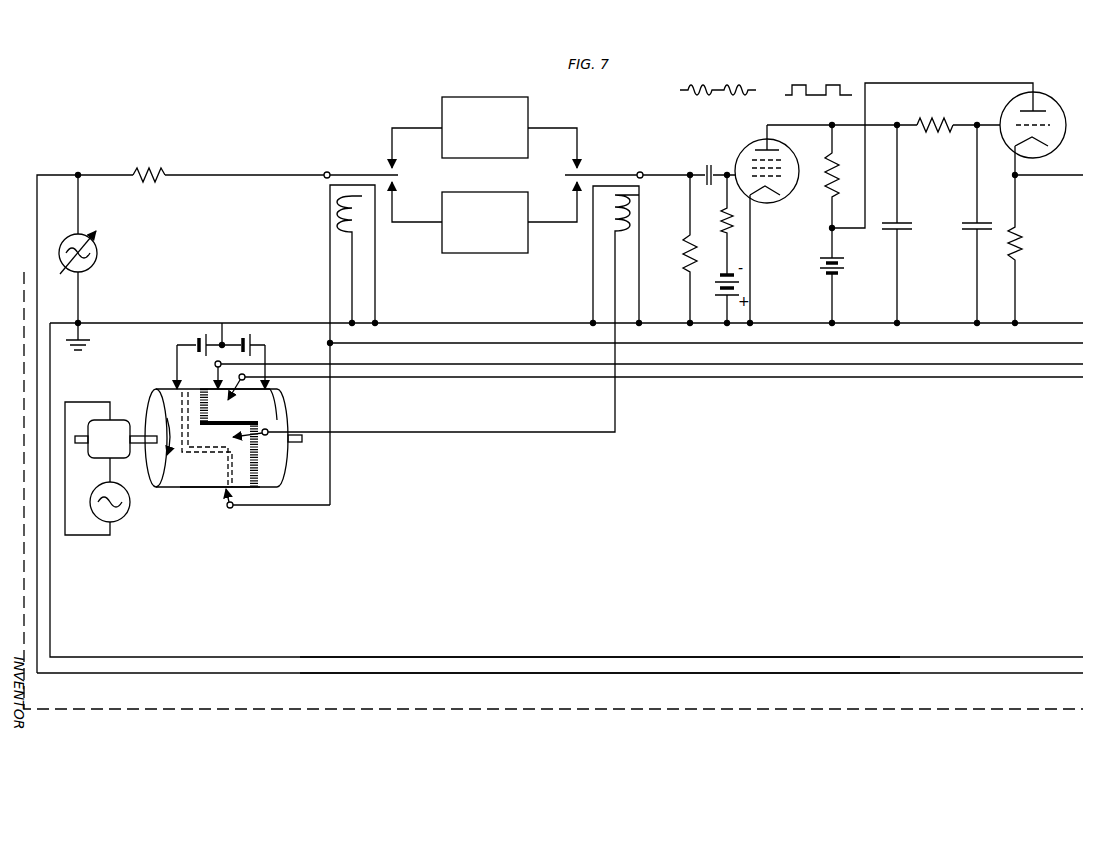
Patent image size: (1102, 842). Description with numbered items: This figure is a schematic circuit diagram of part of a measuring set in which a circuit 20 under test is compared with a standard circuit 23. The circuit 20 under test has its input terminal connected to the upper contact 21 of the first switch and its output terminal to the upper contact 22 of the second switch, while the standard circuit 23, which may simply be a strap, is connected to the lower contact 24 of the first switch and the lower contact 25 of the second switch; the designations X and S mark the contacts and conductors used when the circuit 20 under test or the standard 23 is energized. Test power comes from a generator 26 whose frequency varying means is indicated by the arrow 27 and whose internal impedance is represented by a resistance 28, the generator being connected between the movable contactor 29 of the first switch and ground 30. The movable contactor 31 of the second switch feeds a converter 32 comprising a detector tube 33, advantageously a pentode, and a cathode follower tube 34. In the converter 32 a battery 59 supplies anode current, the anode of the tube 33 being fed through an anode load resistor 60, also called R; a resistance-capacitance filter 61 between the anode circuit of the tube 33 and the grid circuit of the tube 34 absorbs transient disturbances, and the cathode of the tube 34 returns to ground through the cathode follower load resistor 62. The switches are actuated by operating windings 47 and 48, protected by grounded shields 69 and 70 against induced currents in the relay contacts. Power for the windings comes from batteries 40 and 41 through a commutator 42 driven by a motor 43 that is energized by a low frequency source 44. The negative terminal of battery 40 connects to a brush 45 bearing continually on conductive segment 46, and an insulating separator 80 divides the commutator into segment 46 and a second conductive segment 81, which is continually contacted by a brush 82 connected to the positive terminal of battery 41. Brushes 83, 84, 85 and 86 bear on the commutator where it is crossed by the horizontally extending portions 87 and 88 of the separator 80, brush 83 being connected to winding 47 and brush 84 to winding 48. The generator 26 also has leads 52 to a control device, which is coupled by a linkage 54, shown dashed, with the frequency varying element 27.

The circuit under test 20 is at (484, 96).
The upper contact of switch S1 21 is at (390, 139).
The upper contact of switch S2 22 is at (582, 139).
The standard circuit 23 is at (487, 253).
The lower contact of switch S1 24 is at (386, 206).
The lower contact of switch S2 25 is at (585, 206).
The generator 26 is at (93, 267).
The arrow indicating frequency variation means 27 is at (98, 236).
The resistance 28 is at (147, 164).
The movable contactor of switch S1 29 is at (327, 171).
The ground 30 is at (84, 333).
The movable contactor of switch S2 31 is at (642, 171).
The converter 32 is at (906, 67).
The detector tube 33 is at (750, 145).
The cathode follower tube 34 is at (1007, 110).
The battery 40 is at (198, 335).
The battery 41 is at (248, 335).
The commutator 42 is at (158, 487).
The motor 43 is at (117, 418).
The low frequency source 44 is at (124, 520).
The brush 45 is at (176, 376).
The conductive segment 46 is at (209, 489).
The operating winding 47 is at (340, 233).
The operating winding 48 is at (628, 221).
The leads 52 is at (604, 672).
The linkage 54 is at (543, 712).
The battery 59 is at (820, 264).
The anode load resistor 60 is at (823, 188).
The resistance-capacitance filter 61 is at (925, 181).
The cathode follower load resistor 62 is at (1023, 243).
The grounded shield 69 is at (331, 345).
The grounded shield 70 is at (471, 309).
The insulating separator 80 is at (256, 465).
The conductive segment 81 is at (283, 406).
The brush 82 is at (277, 385).
The brush 83 is at (232, 508).
The brush 84 is at (256, 440).
The brush 85 is at (236, 393).
The brush 86 is at (214, 375).
The portion of separator 87 is at (242, 422).
The portion of separator 88 is at (197, 455).